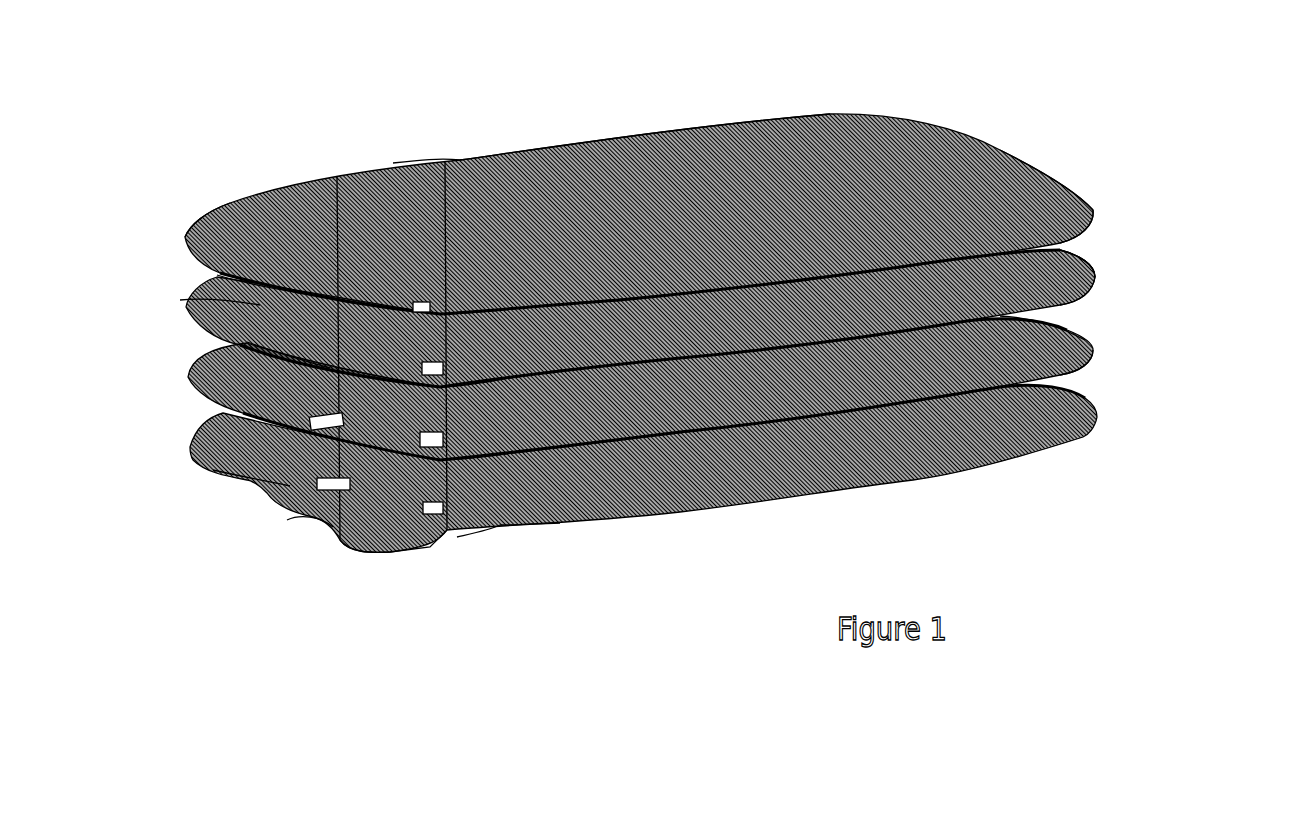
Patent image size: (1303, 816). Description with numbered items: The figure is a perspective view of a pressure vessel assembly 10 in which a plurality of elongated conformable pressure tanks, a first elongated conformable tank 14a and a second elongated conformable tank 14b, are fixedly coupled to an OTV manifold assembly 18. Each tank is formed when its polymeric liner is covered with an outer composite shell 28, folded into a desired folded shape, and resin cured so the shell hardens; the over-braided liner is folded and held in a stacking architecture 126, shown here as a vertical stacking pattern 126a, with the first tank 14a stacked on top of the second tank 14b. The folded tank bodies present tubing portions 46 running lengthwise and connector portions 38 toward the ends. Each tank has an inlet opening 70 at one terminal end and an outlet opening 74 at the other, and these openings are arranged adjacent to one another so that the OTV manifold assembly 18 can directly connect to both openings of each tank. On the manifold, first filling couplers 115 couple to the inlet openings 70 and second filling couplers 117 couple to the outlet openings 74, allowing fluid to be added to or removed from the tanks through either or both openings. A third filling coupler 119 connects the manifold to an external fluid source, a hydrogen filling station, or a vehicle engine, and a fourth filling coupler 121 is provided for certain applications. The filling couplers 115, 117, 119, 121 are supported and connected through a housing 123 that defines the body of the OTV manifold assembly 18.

The pressure vessel assembly 10 is at (678, 346).
The first elongated conformable tank 14a is at (1102, 179).
The second elongated conformable tank 14b is at (1099, 364).
The OTV manifold assembly 18 is at (340, 543).
The outer composite shell 28 is at (475, 163).
The connector portion 38 is at (1053, 177).
The tubing portion 46 is at (673, 130).
The inlet opening 70 is at (185, 235).
The outlet opening 74 is at (393, 163).
The first filling coupler 115 is at (185, 306).
The second filling coupler 117 is at (247, 342).
The third filling coupler 119 is at (287, 520).
The fourth filling coupler 121 is at (213, 470).
The housing 123 is at (217, 275).
The stacking architecture 126 is at (1093, 263).
The vertical stacking pattern 126a is at (1077, 263).